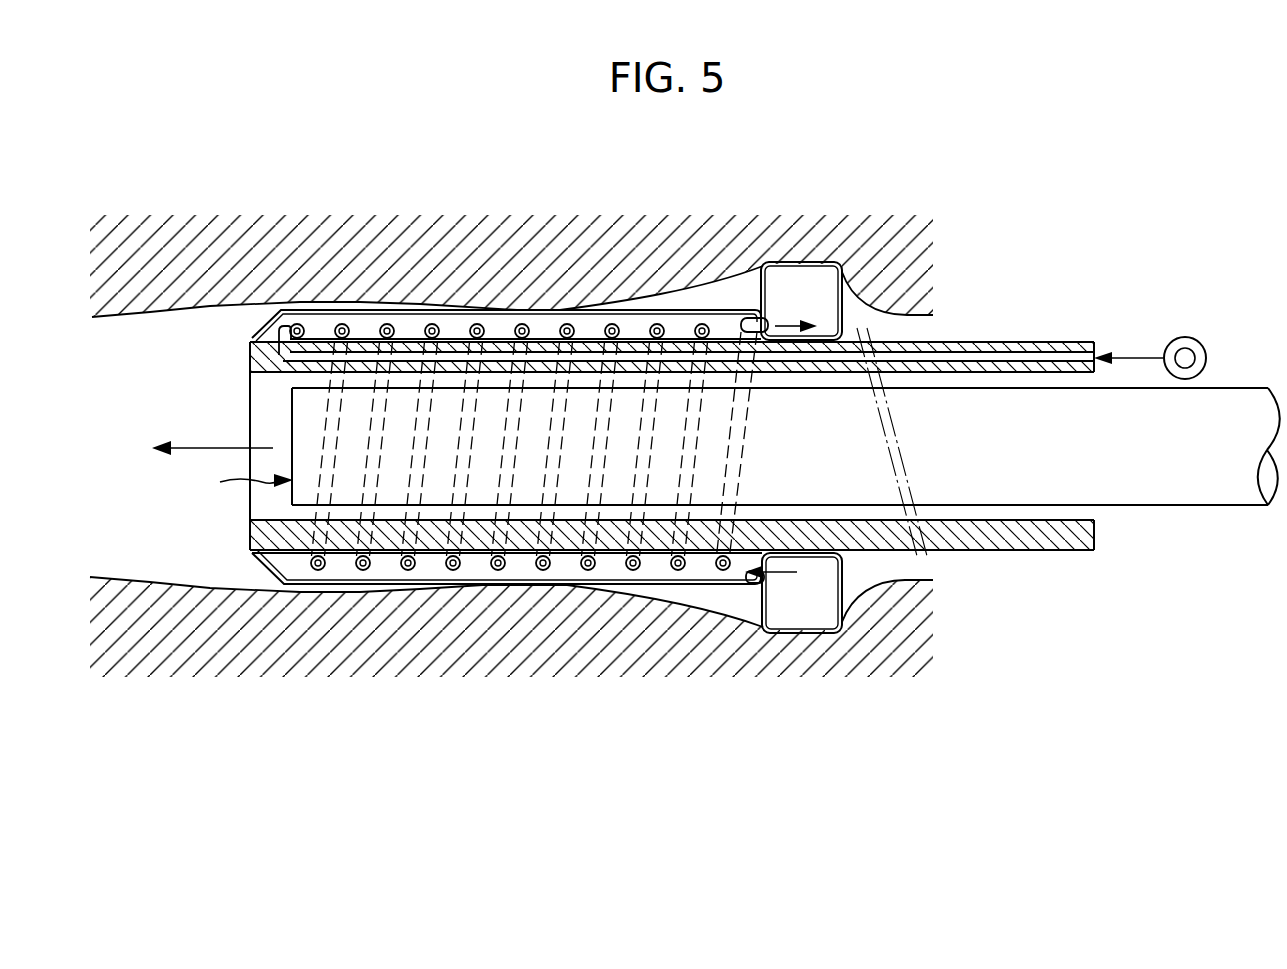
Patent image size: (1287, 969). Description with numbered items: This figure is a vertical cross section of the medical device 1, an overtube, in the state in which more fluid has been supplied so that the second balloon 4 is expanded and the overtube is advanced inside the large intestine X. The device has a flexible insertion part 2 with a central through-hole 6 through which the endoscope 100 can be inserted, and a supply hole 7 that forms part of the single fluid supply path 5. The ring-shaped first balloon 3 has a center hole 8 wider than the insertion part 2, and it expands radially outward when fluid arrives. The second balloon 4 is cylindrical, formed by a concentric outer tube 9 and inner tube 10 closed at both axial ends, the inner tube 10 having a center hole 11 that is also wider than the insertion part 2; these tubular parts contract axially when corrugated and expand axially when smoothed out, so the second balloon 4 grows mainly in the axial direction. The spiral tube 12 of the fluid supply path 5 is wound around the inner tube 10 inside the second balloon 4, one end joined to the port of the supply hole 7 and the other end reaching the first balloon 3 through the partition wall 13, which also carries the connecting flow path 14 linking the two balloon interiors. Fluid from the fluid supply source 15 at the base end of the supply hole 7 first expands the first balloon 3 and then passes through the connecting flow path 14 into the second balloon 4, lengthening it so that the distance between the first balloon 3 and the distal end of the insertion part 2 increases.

The medical device 1 is at (206, 342).
The insertion part 2 is at (955, 332).
The first balloon 3 is at (754, 286).
The second balloon 4 is at (344, 296).
The fluid supply path 5 is at (274, 357).
The through-hole 6 is at (1010, 520).
The supply hole 7 is at (1010, 353).
The center hole 8 is at (809, 345).
The outer tube 9 is at (652, 588).
The inner tube 10 is at (520, 568).
The center hole 11 is at (543, 352).
The tube 12 is at (455, 572).
The partition wall 13 is at (780, 586).
The connecting flow path 14 is at (744, 585).
The fluid supply source 15 is at (1182, 336).
The endoscope 100 is at (222, 468).
The large intestine X is at (132, 577).